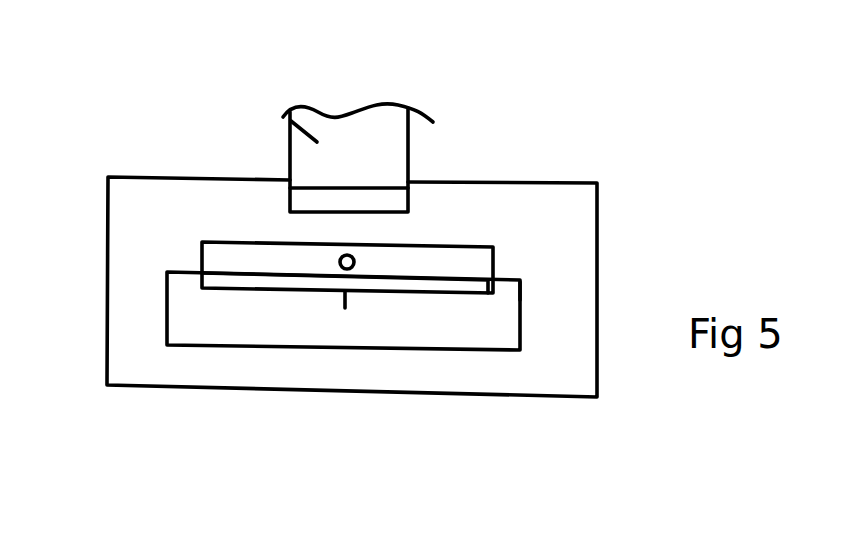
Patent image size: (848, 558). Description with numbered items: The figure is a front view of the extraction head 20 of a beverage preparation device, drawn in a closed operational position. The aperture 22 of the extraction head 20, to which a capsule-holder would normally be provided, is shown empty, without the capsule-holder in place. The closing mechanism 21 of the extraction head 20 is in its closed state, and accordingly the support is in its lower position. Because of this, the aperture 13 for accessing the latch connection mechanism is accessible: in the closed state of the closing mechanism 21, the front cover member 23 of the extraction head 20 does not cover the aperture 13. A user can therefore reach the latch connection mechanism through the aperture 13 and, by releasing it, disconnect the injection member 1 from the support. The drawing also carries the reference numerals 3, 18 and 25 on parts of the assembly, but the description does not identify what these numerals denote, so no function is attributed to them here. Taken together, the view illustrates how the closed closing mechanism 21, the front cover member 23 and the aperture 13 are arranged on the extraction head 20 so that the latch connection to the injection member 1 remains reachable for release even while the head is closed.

The injection member 1 is at (452, 287).
The contact element 3 is at (347, 305).
The aperture 13 is at (345, 269).
The holder 18 is at (420, 258).
The extraction head 20 is at (485, 7).
The closing mechanism 21 is at (287, 115).
The aperture 22 is at (522, 297).
The front cover member 23 is at (128, 235).
The base carrier 25 is at (503, 333).